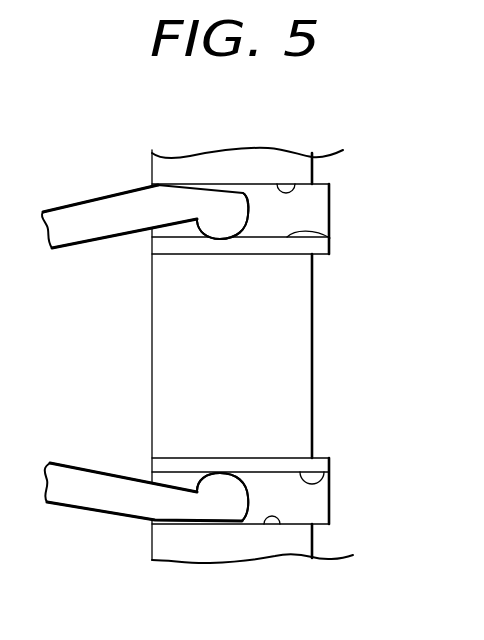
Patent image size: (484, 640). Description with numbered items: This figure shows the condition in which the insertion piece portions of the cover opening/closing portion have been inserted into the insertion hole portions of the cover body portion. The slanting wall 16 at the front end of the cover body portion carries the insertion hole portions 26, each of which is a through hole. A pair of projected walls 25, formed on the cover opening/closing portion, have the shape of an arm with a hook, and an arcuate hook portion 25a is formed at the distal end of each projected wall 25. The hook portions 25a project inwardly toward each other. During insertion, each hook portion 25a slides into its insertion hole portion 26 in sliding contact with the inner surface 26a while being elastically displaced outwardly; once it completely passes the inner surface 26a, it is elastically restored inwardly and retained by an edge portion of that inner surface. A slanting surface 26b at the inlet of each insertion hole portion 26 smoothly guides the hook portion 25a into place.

The slanting wall 16 is at (185, 337).
The projected wall 25 is at (108, 207).
The hook portion 25a is at (233, 215).
The insertion hole portion 26 is at (305, 202).
The inner surface 26a is at (281, 186).
The slanting surface 26b is at (240, 467).